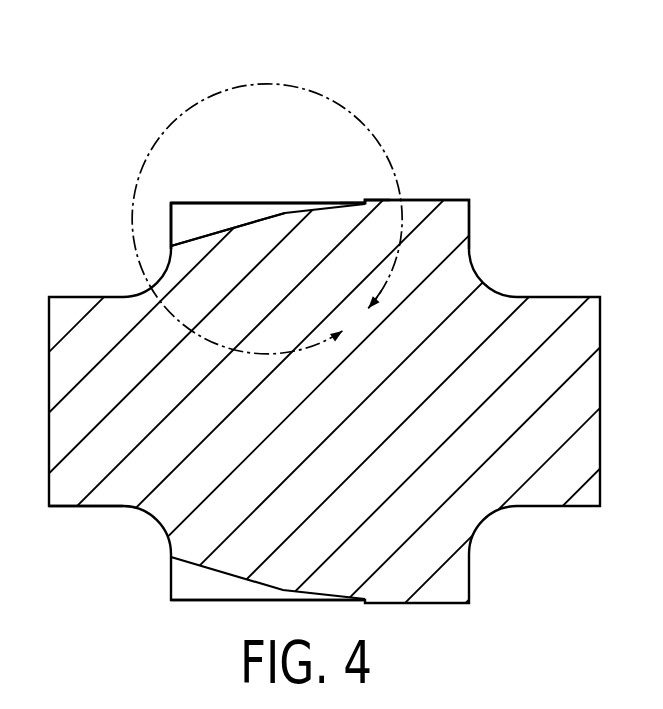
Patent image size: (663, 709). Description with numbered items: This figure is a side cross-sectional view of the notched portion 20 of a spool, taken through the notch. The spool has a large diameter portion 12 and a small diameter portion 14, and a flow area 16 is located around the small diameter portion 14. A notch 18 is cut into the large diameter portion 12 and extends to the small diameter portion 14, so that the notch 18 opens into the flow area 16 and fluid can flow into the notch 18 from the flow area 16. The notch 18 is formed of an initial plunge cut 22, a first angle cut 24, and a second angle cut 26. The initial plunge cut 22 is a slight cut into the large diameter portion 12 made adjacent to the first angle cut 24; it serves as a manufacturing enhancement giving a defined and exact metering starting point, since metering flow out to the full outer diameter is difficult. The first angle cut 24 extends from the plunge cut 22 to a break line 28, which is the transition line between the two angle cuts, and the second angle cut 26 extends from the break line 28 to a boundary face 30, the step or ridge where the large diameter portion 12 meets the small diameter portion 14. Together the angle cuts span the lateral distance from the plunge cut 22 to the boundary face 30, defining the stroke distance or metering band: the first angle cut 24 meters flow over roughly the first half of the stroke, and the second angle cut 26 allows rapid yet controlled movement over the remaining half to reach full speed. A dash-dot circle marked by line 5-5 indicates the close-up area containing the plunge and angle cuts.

The notched portion 20 is at (88, 163).
The flow area 16 is at (98, 282).
The notch 18 is at (237, 173).
The initial plunge cut 22 is at (365, 200).
The first angle cut 24 is at (307, 210).
The second angle cut 26 is at (213, 234).
The break line 28 is at (285, 212).
The boundary face 30 is at (171, 243).
The small diameter portion 14 is at (63, 507).
The large diameter portion 12 is at (190, 601).
The line 5- 5 is at (267, 219).